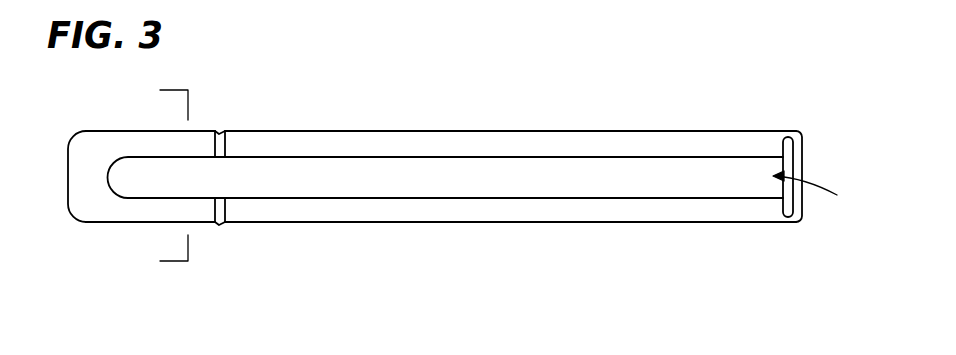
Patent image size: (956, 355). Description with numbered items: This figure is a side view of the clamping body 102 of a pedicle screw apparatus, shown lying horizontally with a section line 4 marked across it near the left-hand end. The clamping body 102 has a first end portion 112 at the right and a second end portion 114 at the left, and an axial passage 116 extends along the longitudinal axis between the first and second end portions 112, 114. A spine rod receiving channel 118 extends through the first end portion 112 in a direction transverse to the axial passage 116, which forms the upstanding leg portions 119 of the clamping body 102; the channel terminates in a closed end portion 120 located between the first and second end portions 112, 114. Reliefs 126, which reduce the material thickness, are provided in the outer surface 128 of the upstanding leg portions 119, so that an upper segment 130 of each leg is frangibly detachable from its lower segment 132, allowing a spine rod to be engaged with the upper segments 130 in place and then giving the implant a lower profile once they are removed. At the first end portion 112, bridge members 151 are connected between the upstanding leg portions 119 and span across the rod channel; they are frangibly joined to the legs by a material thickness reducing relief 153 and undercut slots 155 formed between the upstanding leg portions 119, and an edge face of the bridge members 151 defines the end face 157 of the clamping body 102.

The section line 4- 4 is at (165, 175).
The clamping body 102 is at (255, 102).
The first end portion 112 is at (775, 220).
The second end portion 114 is at (72, 200).
The axial passage 116 is at (822, 192).
The spine rod receiving channel 118 is at (150, 180).
The upstanding leg portions 119 is at (99, 131).
The closed end portion 120 is at (113, 187).
The reliefs 126 is at (220, 131).
The outer surface 128 is at (271, 131).
The upper segment 130 is at (297, 223).
The lower segment 132 is at (203, 223).
The bridge members 151 is at (797, 165).
The material thickness reducing relief 153 is at (782, 131).
The undercut slots 155 is at (788, 137).
The end face 157 is at (802, 212).